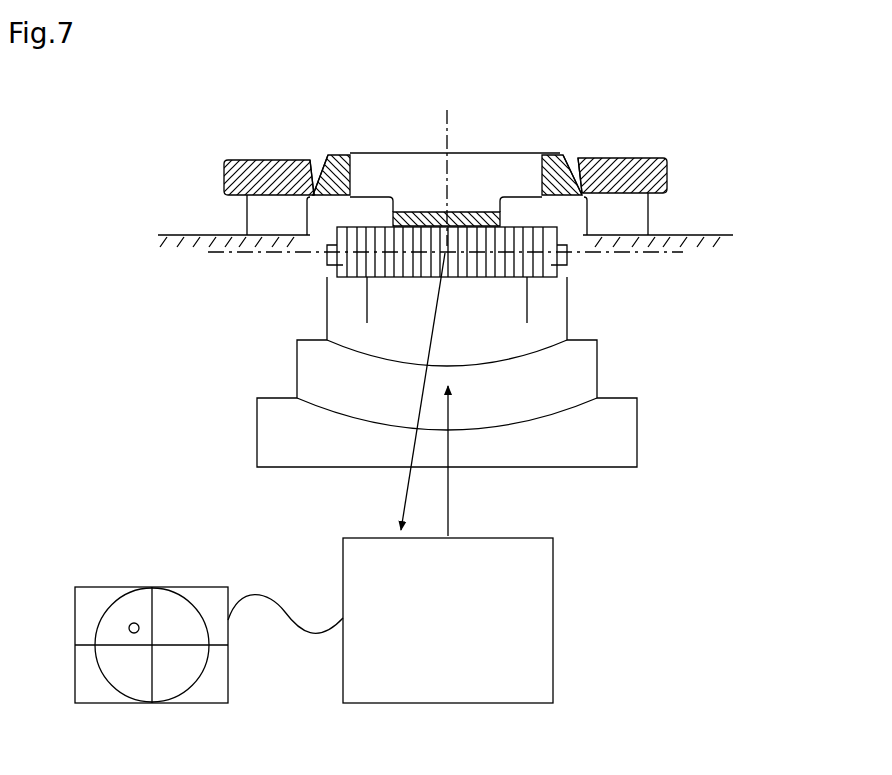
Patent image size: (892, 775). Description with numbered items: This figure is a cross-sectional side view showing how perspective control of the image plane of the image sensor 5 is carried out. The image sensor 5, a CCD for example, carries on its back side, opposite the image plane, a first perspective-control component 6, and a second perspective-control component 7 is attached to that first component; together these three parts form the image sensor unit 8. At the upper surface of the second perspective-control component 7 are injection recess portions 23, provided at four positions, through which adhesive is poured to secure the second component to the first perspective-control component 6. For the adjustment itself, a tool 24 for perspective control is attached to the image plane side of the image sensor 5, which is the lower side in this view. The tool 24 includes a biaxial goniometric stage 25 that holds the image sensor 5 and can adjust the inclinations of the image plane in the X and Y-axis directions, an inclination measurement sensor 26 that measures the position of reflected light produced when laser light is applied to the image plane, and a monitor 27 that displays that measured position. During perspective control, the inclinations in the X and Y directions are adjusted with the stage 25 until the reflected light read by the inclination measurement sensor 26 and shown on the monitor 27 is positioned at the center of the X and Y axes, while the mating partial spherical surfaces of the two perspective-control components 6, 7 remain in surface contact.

The image sensor 5 is at (327, 278).
The first perspective-control component 6 is at (340, 156).
The second perspective-control component 7 is at (263, 160).
The image sensor unit 8 is at (670, 146).
The injection recess portion 23 is at (313, 160).
The tool 24 is at (672, 708).
The biaxial goniometric stage 25 is at (257, 428).
The inclination measurement sensor 26 is at (447, 703).
The monitor 27 is at (187, 703).